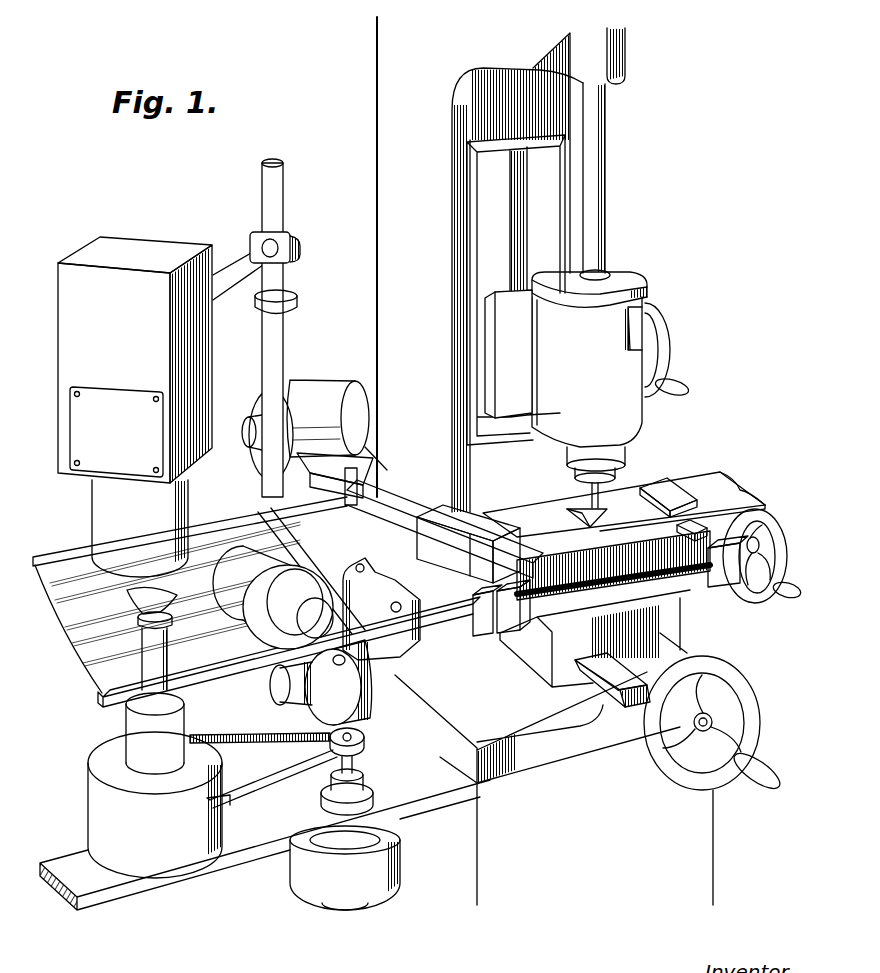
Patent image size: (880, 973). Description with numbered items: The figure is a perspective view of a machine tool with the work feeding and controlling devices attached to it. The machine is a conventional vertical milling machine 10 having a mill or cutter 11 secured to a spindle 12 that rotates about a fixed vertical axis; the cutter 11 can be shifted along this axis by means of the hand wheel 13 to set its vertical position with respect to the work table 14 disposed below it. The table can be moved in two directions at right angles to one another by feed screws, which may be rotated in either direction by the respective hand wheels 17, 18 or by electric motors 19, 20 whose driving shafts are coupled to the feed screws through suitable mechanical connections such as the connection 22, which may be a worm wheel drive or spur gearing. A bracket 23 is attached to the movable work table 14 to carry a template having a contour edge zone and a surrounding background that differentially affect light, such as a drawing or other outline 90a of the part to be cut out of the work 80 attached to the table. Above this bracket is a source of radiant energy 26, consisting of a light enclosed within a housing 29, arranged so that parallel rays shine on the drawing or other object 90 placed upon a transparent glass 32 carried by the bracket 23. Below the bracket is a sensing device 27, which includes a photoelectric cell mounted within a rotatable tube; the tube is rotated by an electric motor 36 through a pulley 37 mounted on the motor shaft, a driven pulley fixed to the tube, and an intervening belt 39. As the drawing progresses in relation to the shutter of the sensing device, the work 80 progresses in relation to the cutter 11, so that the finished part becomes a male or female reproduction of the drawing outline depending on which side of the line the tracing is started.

The vertical milling machine 10 is at (390, 125).
The cutter 11 is at (573, 495).
The spindle 12 is at (609, 235).
The hand wheel 13 is at (677, 349).
The work table 14 is at (636, 561).
The hand wheel 17 is at (684, 778).
The hand wheel 18 is at (790, 512).
The electric motor 19 is at (320, 385).
The electric motor 20 is at (337, 560).
The mechanical connection 22 is at (261, 684).
The bracket 23 is at (450, 624).
The source of radiant energy 26 is at (70, 486).
The sensing device 27 is at (84, 749).
The housing 29 is at (144, 530).
The transparent glass 32 is at (92, 660).
The electric motor 36 is at (388, 862).
The pulley 37 is at (366, 739).
The belt 39 is at (268, 734).
The work 80 is at (540, 537).
The object 90 is at (152, 600).
The outline 90a is at (166, 607).